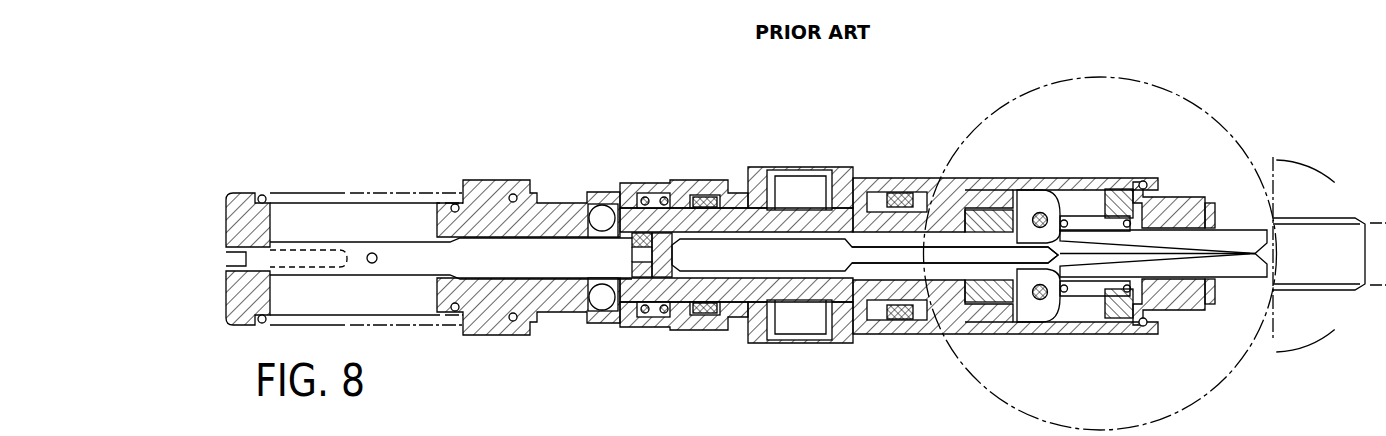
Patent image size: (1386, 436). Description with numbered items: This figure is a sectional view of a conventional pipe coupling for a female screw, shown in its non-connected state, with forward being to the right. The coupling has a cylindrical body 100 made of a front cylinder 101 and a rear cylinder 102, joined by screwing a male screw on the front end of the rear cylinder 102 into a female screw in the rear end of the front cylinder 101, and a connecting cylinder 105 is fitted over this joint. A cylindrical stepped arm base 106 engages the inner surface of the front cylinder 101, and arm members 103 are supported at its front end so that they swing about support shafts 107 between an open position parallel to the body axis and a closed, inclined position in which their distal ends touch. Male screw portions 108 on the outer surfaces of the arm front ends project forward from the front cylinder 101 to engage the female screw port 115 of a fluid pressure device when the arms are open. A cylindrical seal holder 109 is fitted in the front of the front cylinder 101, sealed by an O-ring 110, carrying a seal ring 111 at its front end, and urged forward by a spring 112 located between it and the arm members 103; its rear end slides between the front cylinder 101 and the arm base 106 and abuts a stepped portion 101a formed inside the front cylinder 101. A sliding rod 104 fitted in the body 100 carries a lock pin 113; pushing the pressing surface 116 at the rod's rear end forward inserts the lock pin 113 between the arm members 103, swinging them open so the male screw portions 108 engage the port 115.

The cylindrical body 100 is at (938, 125).
The front cylinder 101 is at (928, 207).
The stepped portion 101a is at (1005, 180).
The rear cylinder 102 is at (813, 222).
The arm members 103 is at (1175, 280).
The sliding rod 104 is at (687, 263).
The connecting cylinder 105 is at (728, 178).
The arm base 106 is at (998, 302).
The support shafts 107 is at (1043, 300).
The male screw portions 108 is at (1237, 280).
The seal holder 109 is at (1182, 197).
The O-ring 110 is at (1118, 188).
The seal ring 111 is at (1216, 212).
The spring 112 is at (1075, 216).
The lock pin 113 is at (880, 258).
The female screw port 115 is at (1303, 215).
The pressing surface 116 is at (258, 192).